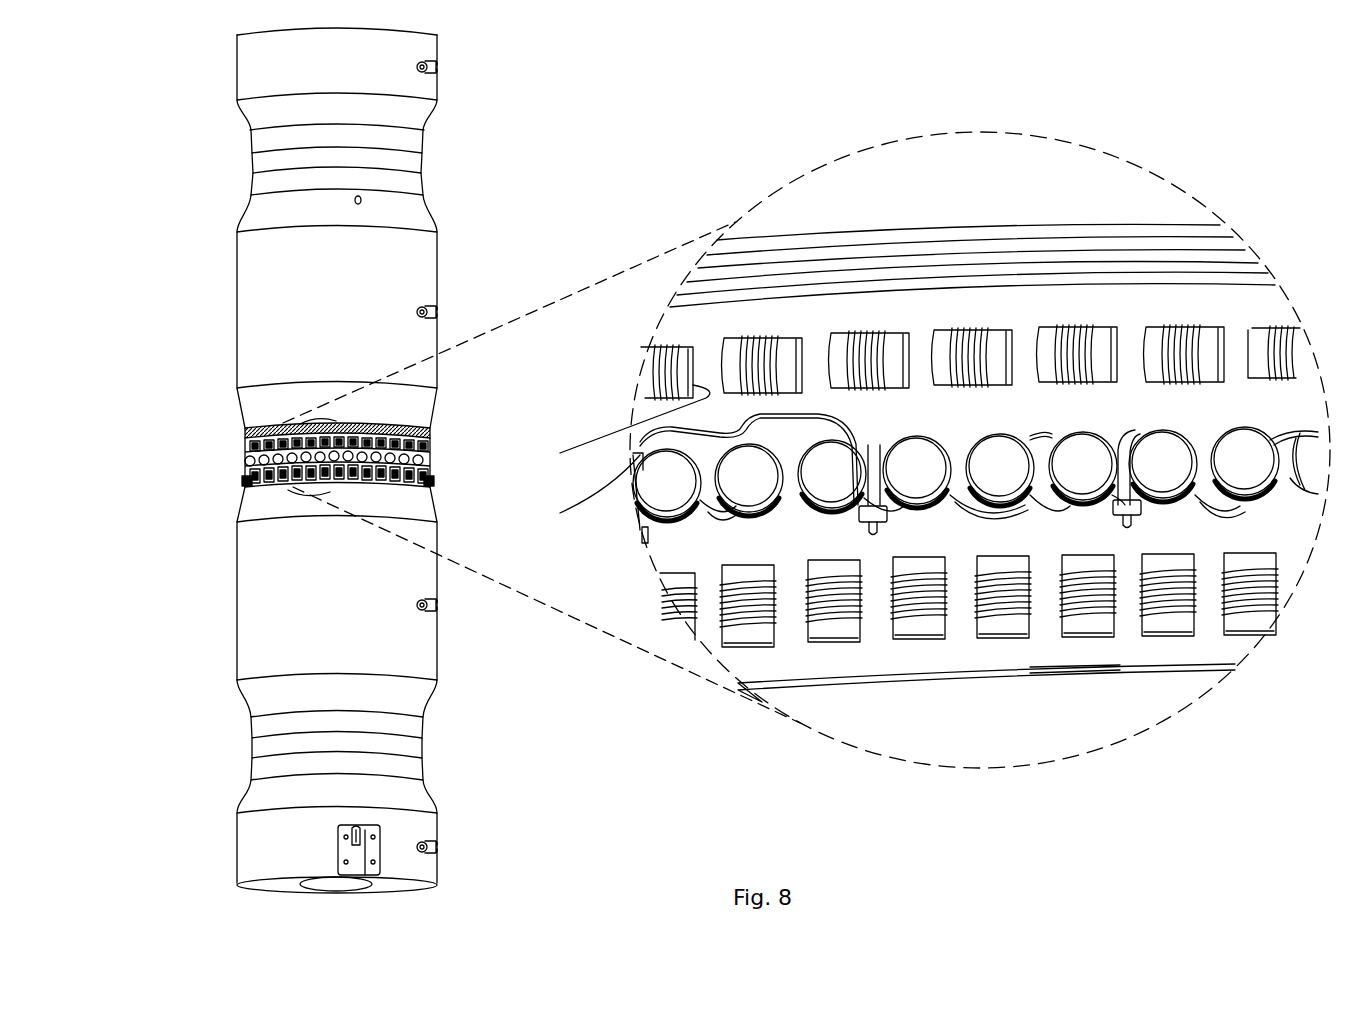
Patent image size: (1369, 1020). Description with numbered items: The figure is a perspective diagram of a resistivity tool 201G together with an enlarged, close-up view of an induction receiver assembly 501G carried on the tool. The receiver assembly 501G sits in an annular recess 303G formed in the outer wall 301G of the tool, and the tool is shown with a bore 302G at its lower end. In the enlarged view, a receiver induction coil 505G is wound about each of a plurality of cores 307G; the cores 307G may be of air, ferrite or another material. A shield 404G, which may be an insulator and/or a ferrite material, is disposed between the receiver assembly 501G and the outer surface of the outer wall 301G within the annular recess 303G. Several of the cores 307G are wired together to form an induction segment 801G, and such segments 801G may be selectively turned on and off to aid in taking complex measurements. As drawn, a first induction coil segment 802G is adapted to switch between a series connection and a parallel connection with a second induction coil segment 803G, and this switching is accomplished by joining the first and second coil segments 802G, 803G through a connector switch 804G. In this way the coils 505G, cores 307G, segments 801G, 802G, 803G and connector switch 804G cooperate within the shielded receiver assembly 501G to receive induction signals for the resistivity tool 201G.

The resistivity tool 201G is at (207, 219).
The outer wall 301G is at (245, 552).
The central bore 302G is at (325, 885).
The annular recess 303G is at (958, 722).
The cores 307G is at (667, 485).
The shield 404G is at (1042, 648).
The receiver assembly 501G is at (238, 491).
The receiver induction coil 505G is at (660, 380).
The induction segment 801G is at (742, 428).
The first induction coil segment 802G is at (1048, 424).
The second induction coil segment 803G is at (1294, 420).
The connector switch 804G is at (1128, 536).